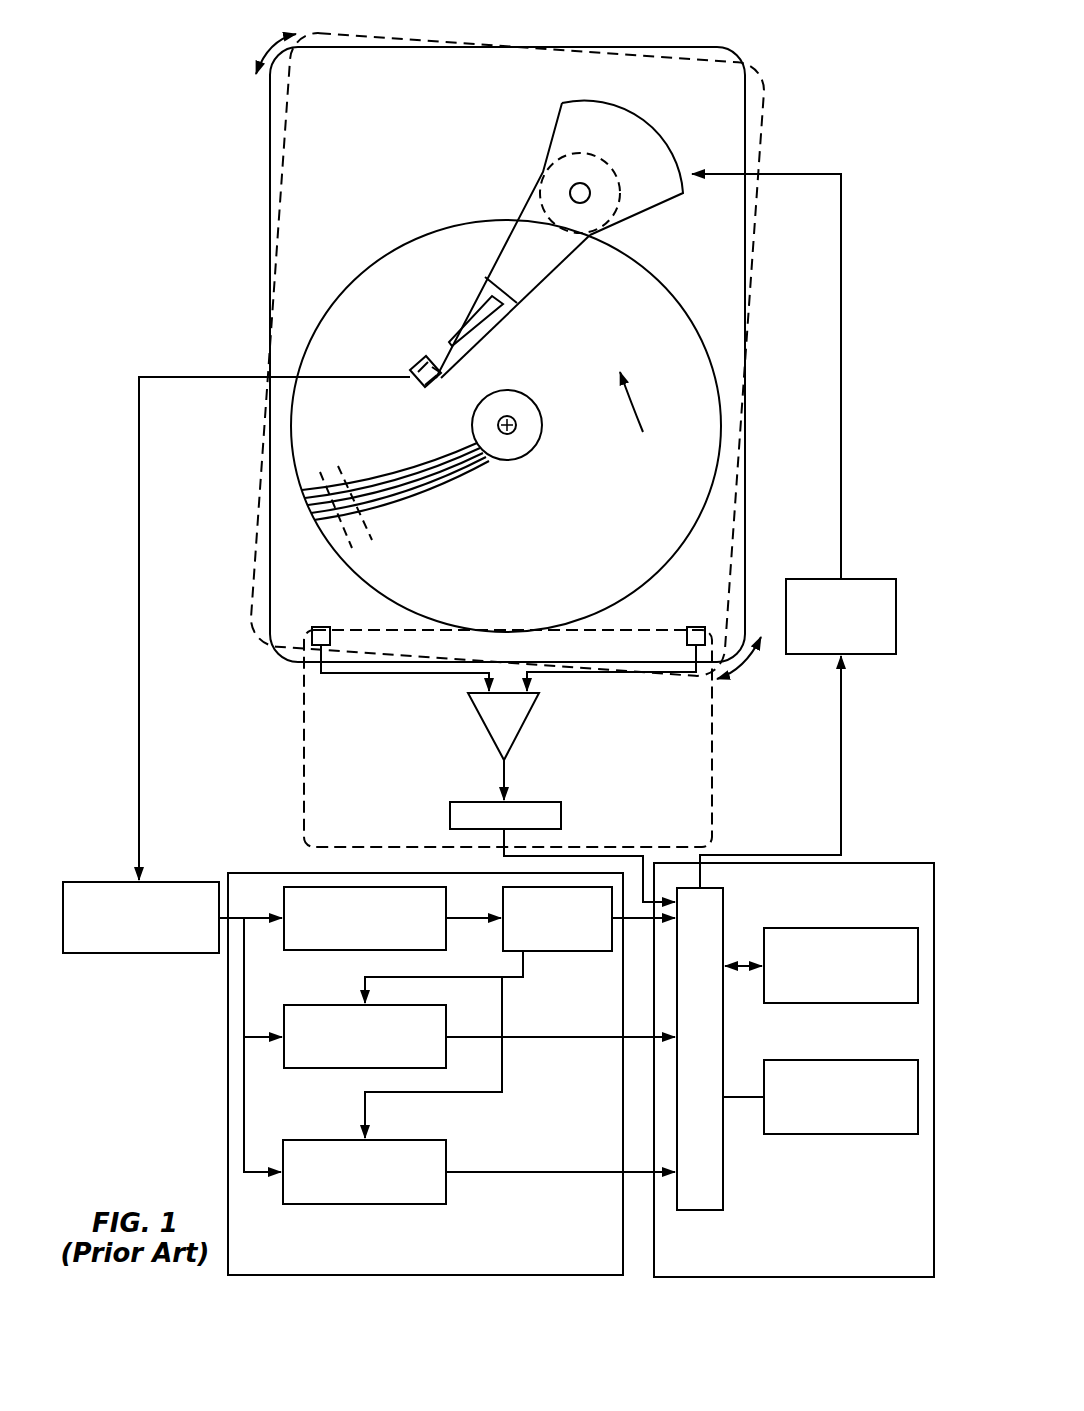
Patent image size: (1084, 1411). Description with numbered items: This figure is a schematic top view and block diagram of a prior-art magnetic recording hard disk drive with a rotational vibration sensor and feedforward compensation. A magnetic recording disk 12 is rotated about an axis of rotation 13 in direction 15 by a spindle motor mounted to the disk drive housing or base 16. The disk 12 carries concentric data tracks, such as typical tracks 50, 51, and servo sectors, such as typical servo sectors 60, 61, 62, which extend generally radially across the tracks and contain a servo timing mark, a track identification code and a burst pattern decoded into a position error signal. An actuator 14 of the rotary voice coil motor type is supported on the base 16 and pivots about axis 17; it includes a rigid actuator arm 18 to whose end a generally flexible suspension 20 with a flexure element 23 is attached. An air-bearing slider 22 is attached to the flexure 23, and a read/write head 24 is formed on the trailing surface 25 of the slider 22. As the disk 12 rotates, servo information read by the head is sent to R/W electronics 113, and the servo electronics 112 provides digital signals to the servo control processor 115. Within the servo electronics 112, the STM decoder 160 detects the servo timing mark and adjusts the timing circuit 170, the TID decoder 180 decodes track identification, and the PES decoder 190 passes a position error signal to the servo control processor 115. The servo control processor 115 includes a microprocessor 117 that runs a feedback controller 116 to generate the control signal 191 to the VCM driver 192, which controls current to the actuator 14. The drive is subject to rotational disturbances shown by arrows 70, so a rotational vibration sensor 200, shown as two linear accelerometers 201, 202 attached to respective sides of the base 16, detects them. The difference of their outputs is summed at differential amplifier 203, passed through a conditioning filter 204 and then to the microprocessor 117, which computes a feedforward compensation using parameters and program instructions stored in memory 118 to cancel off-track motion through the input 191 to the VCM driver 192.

The magnetic recording disk 12 is at (484, 595).
The axis of rotation 13 is at (516, 425).
The actuator 14 is at (640, 118).
The direction of rotation 15 is at (644, 410).
The disk drive housing or base 16 is at (668, 47).
The pivot axis 17 is at (571, 195).
The rigid actuator arm 18 is at (502, 265).
The suspension 20 is at (468, 313).
The air-bearing slider 22 is at (421, 361).
The flexure element 23 is at (453, 374).
The read/write head 24 is at (438, 394).
The trailing surface 25 is at (412, 394).
The data track 50 is at (374, 530).
The data track 51 is at (358, 546).
The servo sector 60 is at (405, 481).
The servo sector 61 is at (461, 470).
The servo sector 62 is at (398, 480).
The arrows indicating rotational disturbances 70 is at (272, 44).
The servo electronics 112 is at (228, 1040).
The R/W electronics 113 is at (130, 882).
The servo control processor 115 is at (875, 863).
The feedback controller 116 is at (860, 1060).
The microprocessor 117 is at (723, 1182).
The memory 118 is at (860, 928).
The STM decoder 160 is at (318, 950).
The timing circuit 170 is at (555, 952).
The TID decoder 180 is at (318, 1068).
The PES decoder 190 is at (318, 1204).
The control signal 191 is at (758, 855).
The VCM driver 192 is at (880, 579).
The rotational vibration sensor 200 is at (305, 775).
The linear accelerometer 201 is at (322, 627).
The linear accelerometer 202 is at (694, 627).
The differential amplifier 203 is at (524, 735).
The conditioning filter 204 is at (540, 802).